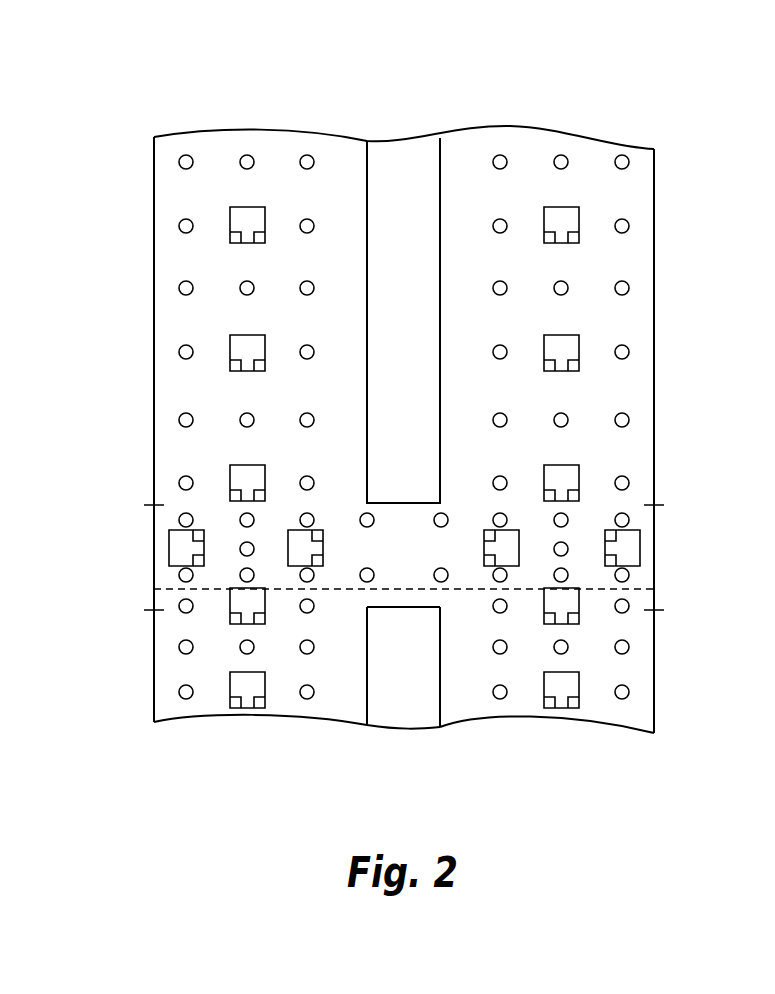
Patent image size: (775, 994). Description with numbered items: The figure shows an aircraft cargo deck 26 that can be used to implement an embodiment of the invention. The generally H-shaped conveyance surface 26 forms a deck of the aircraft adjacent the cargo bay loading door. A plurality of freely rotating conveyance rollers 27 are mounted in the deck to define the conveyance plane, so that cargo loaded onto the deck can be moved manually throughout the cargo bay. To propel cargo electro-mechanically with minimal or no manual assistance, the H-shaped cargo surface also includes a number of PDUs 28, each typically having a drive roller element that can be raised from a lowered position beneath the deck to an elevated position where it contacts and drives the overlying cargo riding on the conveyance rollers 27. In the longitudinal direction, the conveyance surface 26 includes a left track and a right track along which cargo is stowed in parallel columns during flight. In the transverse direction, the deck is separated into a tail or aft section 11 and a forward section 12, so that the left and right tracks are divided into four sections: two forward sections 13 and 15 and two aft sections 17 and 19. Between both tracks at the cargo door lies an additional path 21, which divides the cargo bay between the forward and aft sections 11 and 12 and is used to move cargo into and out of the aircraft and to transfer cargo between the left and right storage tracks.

The tail section 11 is at (142, 681).
The forward section 12 is at (132, 291).
The forward section of left track 13 is at (316, 152).
The forward section of right track 15 is at (640, 168).
The aft section of left track 17 is at (337, 705).
The aft section of right track 19 is at (627, 718).
The additional path 21 is at (113, 565).
The aircraft cargo deck 26 is at (413, 172).
The conveyance rollers 27 is at (388, 237).
The PDUs 28 is at (265, 478).